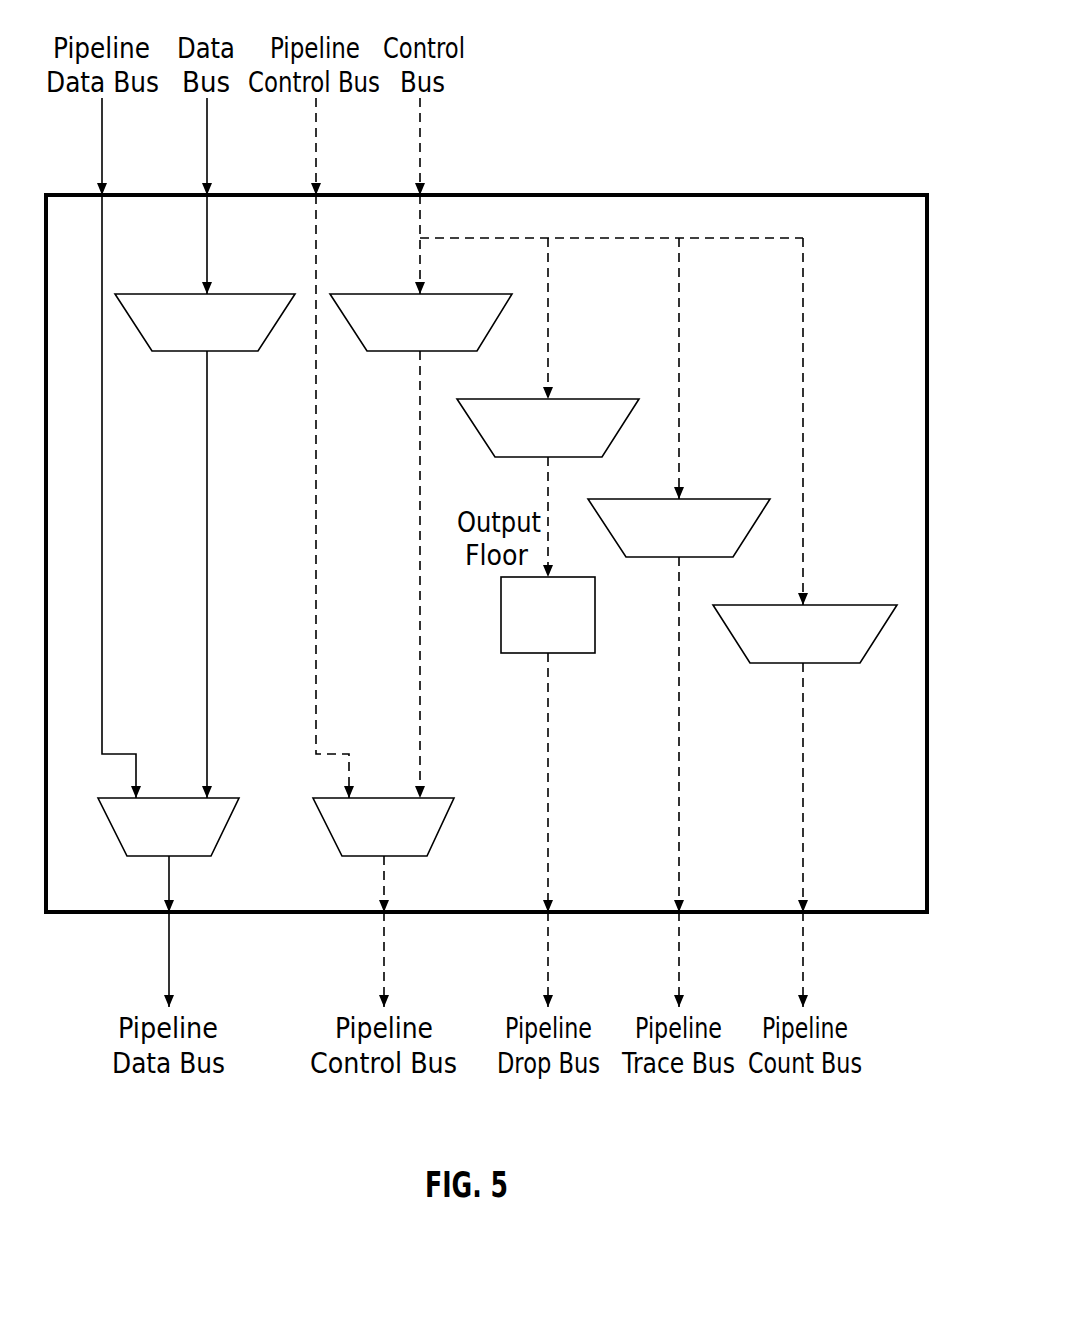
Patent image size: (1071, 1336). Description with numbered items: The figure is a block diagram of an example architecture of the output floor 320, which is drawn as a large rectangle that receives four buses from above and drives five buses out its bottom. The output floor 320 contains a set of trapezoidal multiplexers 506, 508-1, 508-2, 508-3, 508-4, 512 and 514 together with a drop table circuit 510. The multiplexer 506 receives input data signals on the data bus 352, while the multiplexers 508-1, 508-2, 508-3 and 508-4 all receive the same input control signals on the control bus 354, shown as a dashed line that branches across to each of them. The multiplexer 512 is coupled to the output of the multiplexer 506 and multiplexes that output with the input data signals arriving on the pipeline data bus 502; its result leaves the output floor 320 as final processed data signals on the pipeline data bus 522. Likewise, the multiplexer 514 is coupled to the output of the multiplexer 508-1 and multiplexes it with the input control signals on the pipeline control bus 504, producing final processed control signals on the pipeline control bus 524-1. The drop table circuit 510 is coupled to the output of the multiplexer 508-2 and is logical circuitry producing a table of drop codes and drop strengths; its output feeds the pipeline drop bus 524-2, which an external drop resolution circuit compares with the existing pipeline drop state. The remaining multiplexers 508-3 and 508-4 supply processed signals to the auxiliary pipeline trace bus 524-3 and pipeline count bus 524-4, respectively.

The output floor 320 is at (825, 36).
The pipeline data bus 502 is at (103, 153).
The data bus 352 is at (208, 153).
The pipeline control bus 504 is at (317, 153).
The control bus 354 is at (421, 153).
The multiplexer 506 is at (228, 352).
The multiplexer 508-1 is at (443, 352).
The multiplexer 508-2 is at (572, 458).
The multiplexer 508-3 is at (703, 558).
The multiplexer 508-4 is at (828, 664).
The drop table circuit 510 is at (560, 654).
The multiplexer 512 is at (178, 857).
The multiplexer 514 is at (394, 857).
The pipeline data bus 522 is at (170, 976).
The pipeline control bus 524-1 is at (385, 976).
The pipeline drop bus 524-2 is at (549, 976).
The pipeline trace bus 524-3 is at (680, 976).
The pipeline count bus 524-4 is at (804, 976).